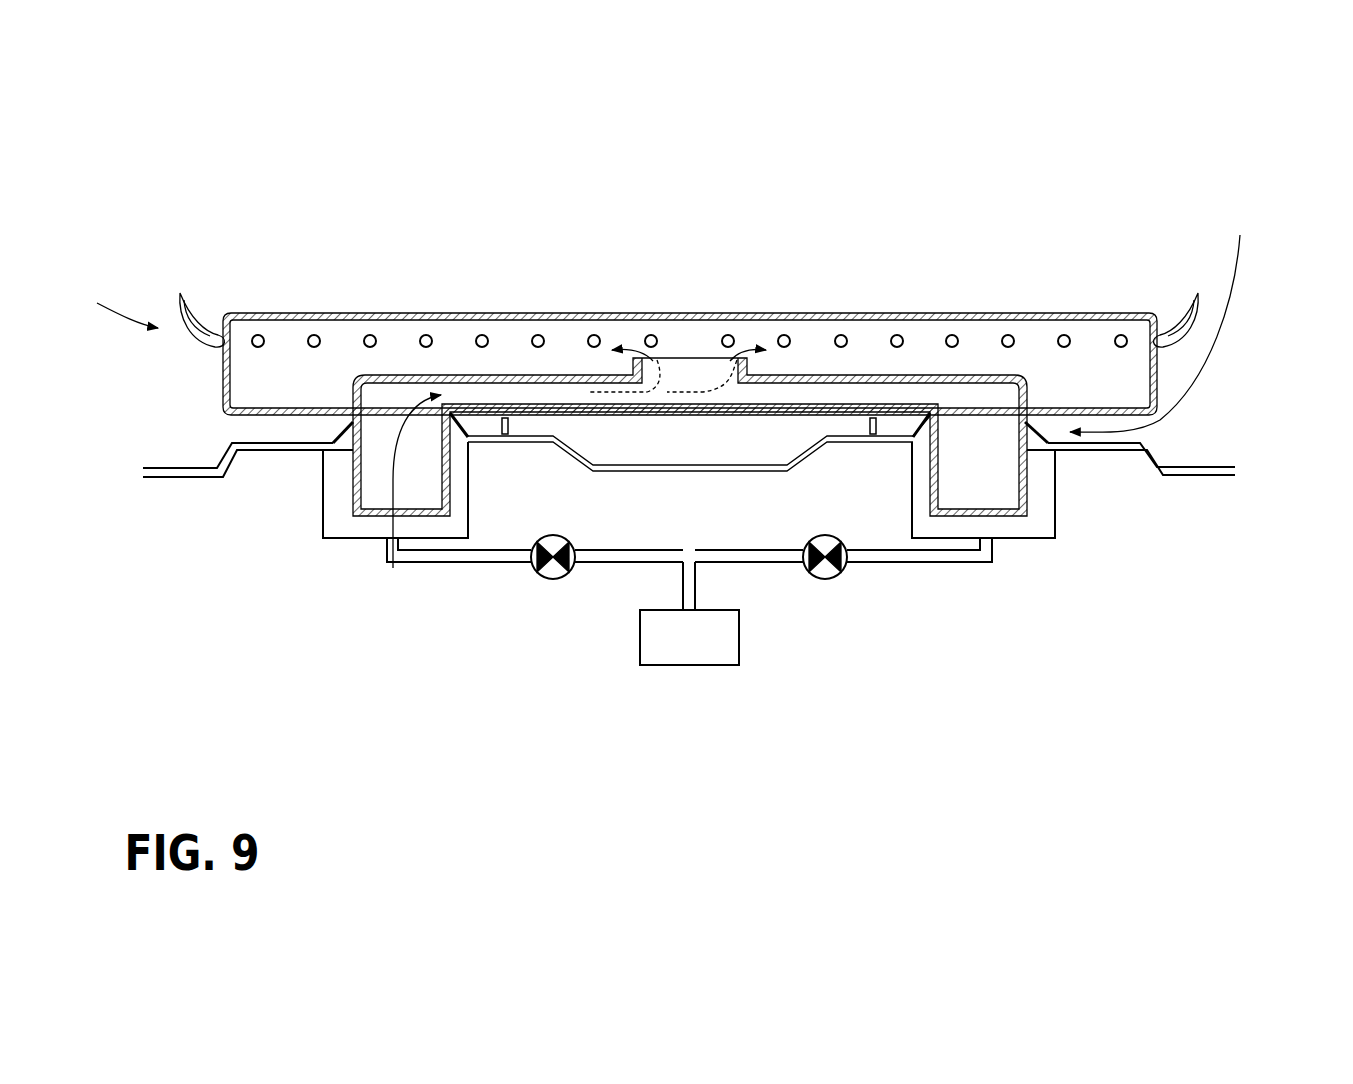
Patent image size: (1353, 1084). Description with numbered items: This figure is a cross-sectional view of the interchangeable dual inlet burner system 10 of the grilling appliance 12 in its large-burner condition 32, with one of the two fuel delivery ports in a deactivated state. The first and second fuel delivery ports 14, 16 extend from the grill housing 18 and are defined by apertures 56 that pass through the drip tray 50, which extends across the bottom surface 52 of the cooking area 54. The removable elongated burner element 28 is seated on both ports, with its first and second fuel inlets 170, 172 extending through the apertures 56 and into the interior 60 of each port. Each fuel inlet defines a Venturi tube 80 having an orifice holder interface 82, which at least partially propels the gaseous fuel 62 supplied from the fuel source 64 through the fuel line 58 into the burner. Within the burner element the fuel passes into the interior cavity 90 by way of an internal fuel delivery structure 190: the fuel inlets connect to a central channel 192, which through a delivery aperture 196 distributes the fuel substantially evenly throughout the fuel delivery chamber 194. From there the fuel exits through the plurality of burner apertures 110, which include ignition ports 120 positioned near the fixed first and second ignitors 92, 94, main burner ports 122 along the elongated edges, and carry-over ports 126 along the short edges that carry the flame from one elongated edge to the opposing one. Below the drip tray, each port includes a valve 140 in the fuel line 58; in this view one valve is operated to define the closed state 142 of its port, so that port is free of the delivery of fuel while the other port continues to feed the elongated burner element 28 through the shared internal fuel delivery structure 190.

The interchangeable dual inlet burner system 10 is at (213, 204).
The grilling appliance 12 is at (1184, 209).
The first fuel delivery port 14 is at (323, 513).
The second fuel delivery port 16 is at (1055, 520).
The grill housing 18 is at (160, 468).
The elongated burner element 28 is at (362, 304).
The large-burner condition 32 is at (112, 302).
The drip tray 50 is at (1140, 440).
The bottom surface 52 is at (1197, 467).
The cooking area 54 is at (458, 296).
The aperture 56 is at (350, 420).
The fuel line 58 is at (600, 550).
The interior 60 is at (1033, 528).
The gaseous fuel 62 is at (393, 480).
The fuel source 64 is at (735, 640).
The Venturi tube 80 is at (450, 470).
The orifice holder interface 82 is at (1164, 319).
The interior cavity 90 is at (293, 356).
The first ignitor 92 is at (510, 426).
The second ignitor 94 is at (872, 426).
The burner apertures 110 is at (426, 334).
The ignition ports 120 is at (488, 335).
The main burner ports 122 is at (1063, 334).
The carry-over ports 126 is at (215, 330).
The valve 140 is at (833, 570).
The closed state 142 is at (1004, 499).
The first fuel inlet 170 is at (350, 462).
The second fuel inlet 172 is at (1020, 480).
The internal fuel delivery structure 190 is at (792, 361).
The central channel 192 is at (571, 392).
The fuel delivery chamber 194 is at (918, 346).
The delivery aperture 196 is at (683, 358).